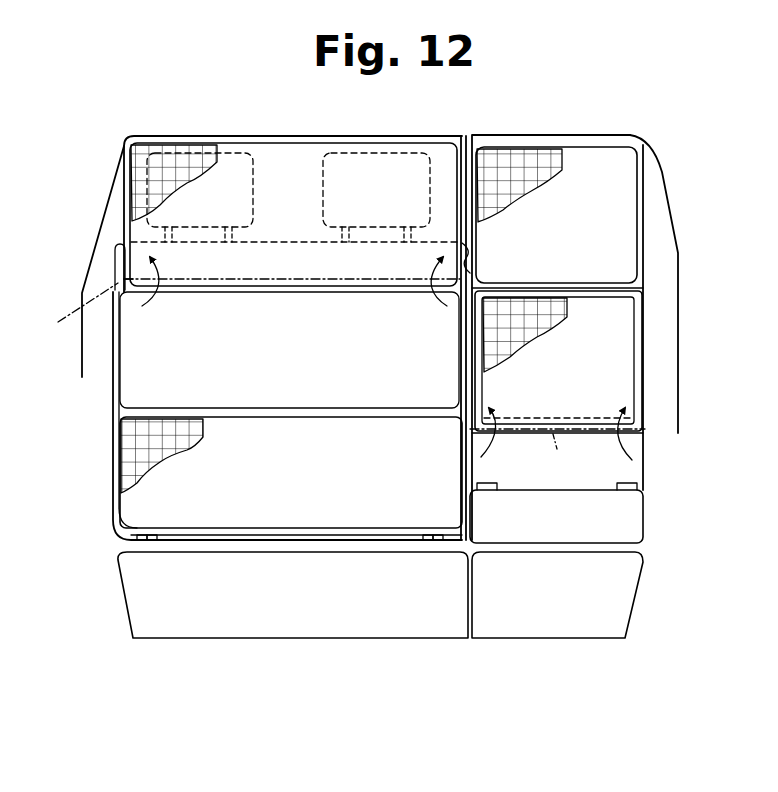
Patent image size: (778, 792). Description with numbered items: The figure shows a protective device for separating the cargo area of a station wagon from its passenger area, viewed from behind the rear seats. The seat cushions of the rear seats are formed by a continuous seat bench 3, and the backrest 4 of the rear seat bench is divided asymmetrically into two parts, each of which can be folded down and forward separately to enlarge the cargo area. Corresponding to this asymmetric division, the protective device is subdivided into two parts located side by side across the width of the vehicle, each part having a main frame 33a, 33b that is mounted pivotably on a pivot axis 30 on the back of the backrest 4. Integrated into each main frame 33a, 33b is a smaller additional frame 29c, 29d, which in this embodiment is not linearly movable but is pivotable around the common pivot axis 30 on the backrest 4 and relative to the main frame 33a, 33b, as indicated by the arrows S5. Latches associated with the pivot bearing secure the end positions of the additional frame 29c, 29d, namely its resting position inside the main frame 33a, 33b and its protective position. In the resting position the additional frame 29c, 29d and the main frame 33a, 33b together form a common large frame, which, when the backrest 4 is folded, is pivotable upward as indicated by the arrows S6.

The seat bench 3 is at (309, 624).
The backrest 4 is at (113, 538).
The additional frame 29c is at (313, 227).
The additional frame 29d is at (590, 375).
The pivot axis 30 is at (315, 377).
The main frame 33a is at (288, 497).
The main frame 33b is at (590, 245).
The arrow S5 is at (142, 306).
The arrow S6 is at (481, 457).